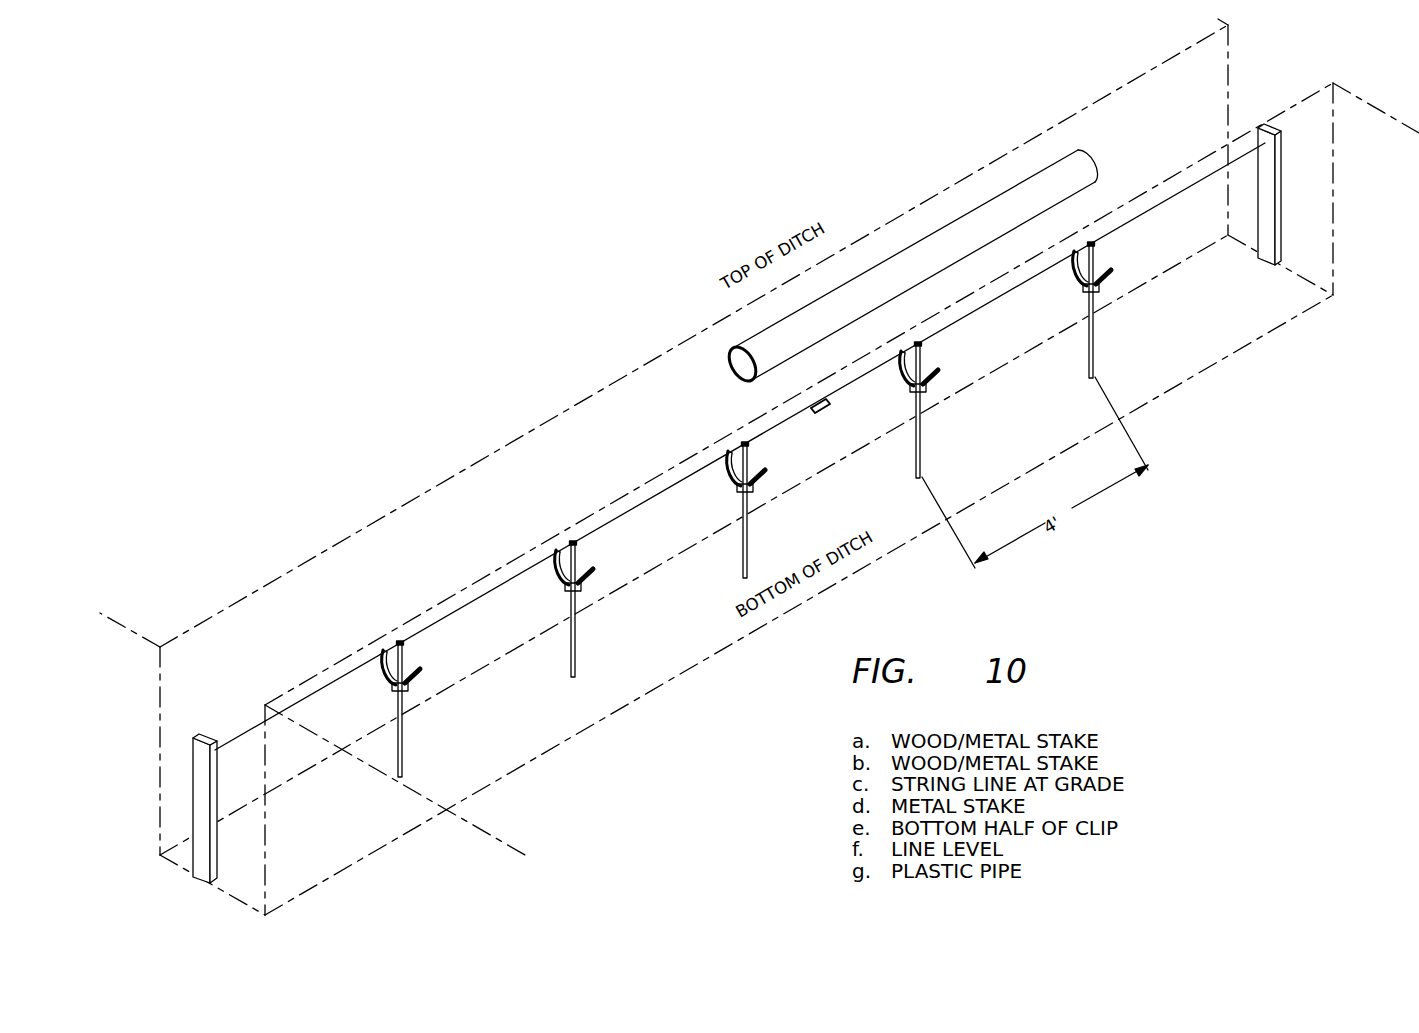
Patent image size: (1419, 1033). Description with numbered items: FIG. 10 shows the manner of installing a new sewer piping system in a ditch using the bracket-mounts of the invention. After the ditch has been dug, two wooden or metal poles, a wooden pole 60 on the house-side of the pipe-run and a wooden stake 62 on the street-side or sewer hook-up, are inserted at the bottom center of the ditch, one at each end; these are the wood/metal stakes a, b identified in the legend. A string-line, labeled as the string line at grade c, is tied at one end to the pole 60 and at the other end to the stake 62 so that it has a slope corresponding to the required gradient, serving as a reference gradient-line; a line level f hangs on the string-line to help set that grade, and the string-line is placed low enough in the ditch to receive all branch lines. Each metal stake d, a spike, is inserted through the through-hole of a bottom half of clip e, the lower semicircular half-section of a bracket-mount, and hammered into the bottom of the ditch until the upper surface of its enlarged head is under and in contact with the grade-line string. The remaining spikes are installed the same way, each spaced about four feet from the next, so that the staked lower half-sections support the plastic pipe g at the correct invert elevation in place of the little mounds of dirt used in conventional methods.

The wooden pole 60 is at (740, 430).
The wooden stake 62 is at (158, 808).
The wood/metal stake a is at (1269, 194).
The wood/metal stake b is at (205, 808).
The string line at grade c is at (427, 555).
The metal stake d is at (752, 509).
The bottom half of clip e is at (740, 471).
The line level f is at (825, 408).
The plastic pipe g is at (911, 268).